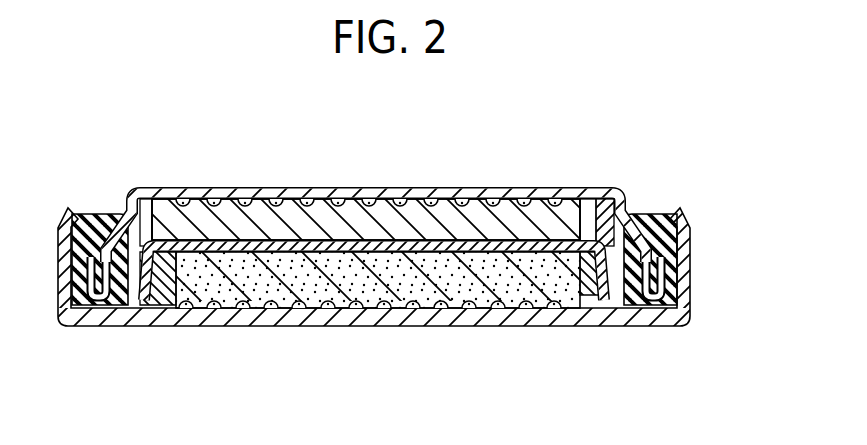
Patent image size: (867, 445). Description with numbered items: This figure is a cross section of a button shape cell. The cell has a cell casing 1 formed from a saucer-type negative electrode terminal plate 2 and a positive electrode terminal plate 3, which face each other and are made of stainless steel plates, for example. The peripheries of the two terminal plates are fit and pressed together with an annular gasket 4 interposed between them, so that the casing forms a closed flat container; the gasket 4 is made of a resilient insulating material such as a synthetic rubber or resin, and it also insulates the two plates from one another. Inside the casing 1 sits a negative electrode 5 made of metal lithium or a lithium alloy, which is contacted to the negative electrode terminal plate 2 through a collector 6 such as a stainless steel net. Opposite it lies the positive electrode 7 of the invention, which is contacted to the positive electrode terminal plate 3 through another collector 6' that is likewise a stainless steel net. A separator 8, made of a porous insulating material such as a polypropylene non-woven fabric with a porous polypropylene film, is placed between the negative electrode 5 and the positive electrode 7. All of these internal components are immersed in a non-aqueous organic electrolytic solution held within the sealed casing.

The cell casing 1 is at (253, 187).
The negative electrode terminal plate 2 is at (387, 187).
The positive electrode terminal plate 3 is at (380, 318).
The annular gasket 4 is at (660, 238).
The negative electrode 5 is at (444, 228).
The collector 6 is at (369, 159).
The collector 6' is at (370, 352).
The positive electrode 7 is at (223, 283).
The separator 8 is at (509, 243).